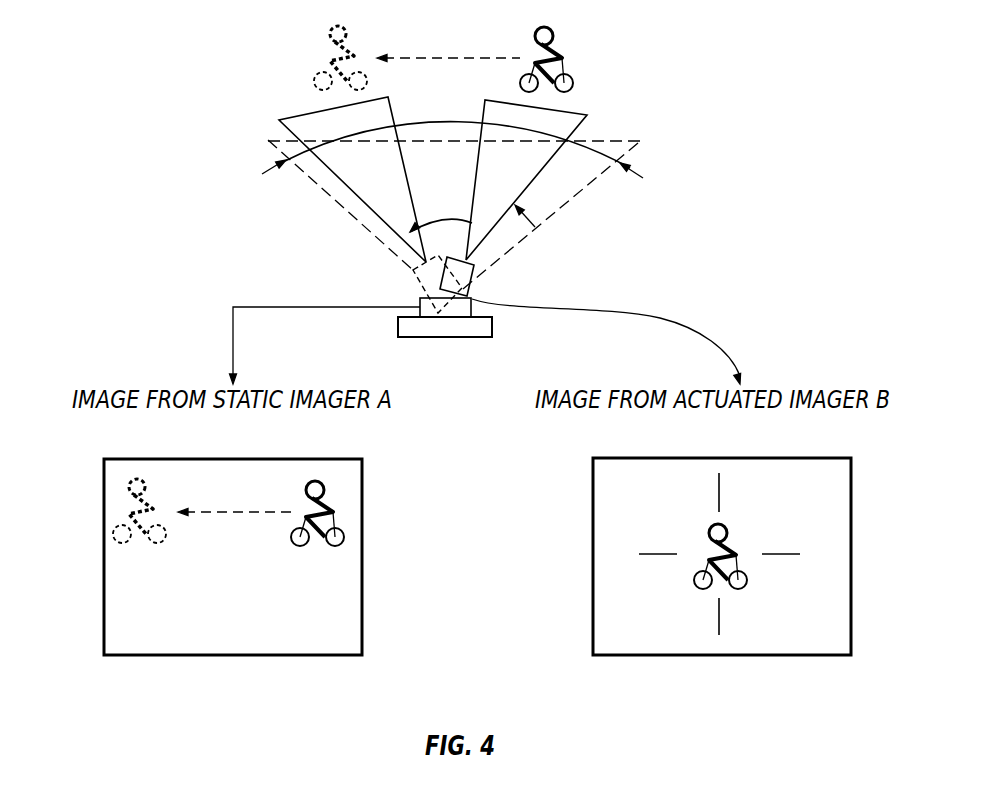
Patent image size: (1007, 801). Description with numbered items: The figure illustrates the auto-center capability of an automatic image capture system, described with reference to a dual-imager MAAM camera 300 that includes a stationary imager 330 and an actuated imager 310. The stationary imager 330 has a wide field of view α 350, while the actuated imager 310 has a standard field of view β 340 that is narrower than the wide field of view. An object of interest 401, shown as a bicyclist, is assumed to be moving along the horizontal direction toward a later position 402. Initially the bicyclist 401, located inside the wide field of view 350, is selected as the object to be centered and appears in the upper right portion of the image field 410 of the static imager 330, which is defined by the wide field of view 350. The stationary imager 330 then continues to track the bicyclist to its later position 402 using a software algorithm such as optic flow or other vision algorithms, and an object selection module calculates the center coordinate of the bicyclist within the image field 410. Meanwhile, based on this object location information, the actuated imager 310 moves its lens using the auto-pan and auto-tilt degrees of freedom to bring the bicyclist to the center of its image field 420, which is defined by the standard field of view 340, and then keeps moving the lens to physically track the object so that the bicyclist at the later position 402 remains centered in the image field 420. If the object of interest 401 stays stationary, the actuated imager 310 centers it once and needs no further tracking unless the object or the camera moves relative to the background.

The dual-imager MAAM camera 300 is at (406, 297).
The actuated imager 310 is at (477, 273).
The stationary imager 330 is at (474, 303).
The standard field of view β 340 is at (438, 183).
The wide field of view α 350 is at (478, 124).
The object of interest 401 is at (580, 54).
The later position 402 is at (294, 53).
The image field of the static imager 410 is at (328, 459).
The image field of the actuated imager 420 is at (405, 236).